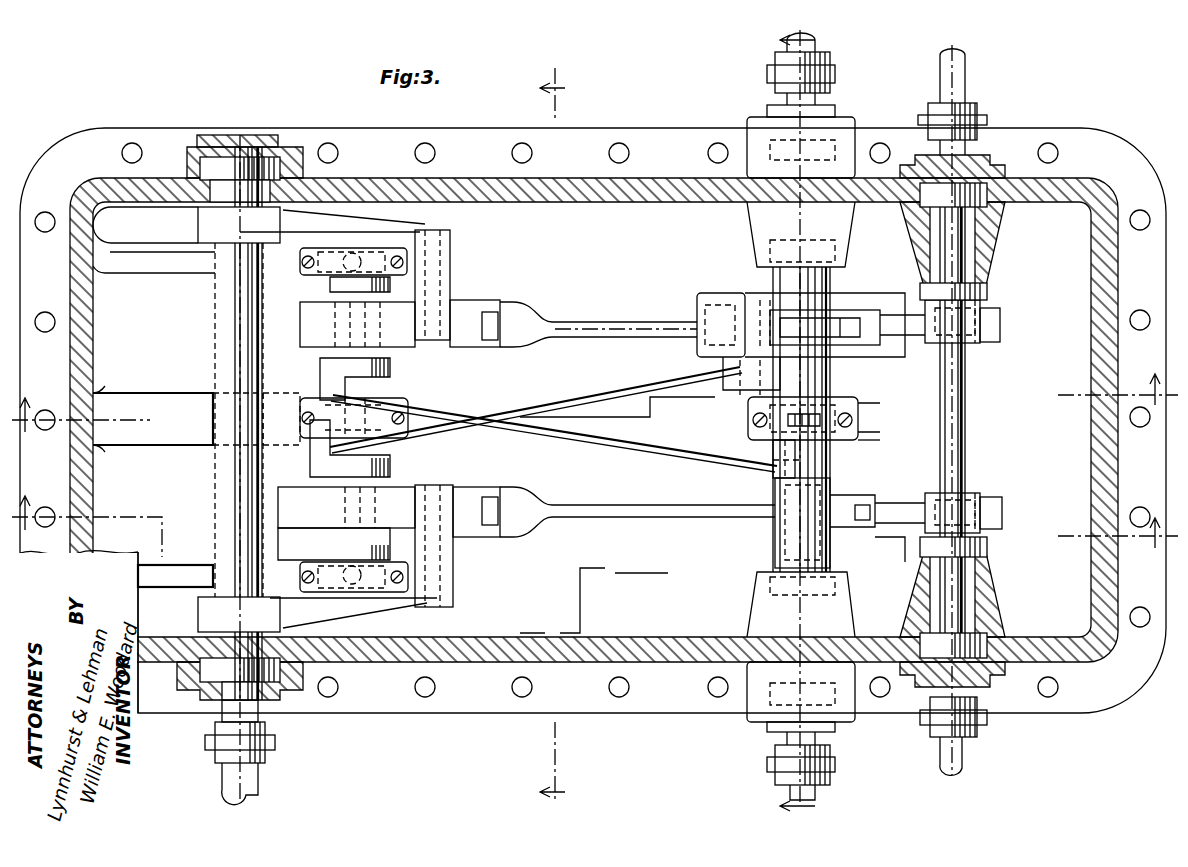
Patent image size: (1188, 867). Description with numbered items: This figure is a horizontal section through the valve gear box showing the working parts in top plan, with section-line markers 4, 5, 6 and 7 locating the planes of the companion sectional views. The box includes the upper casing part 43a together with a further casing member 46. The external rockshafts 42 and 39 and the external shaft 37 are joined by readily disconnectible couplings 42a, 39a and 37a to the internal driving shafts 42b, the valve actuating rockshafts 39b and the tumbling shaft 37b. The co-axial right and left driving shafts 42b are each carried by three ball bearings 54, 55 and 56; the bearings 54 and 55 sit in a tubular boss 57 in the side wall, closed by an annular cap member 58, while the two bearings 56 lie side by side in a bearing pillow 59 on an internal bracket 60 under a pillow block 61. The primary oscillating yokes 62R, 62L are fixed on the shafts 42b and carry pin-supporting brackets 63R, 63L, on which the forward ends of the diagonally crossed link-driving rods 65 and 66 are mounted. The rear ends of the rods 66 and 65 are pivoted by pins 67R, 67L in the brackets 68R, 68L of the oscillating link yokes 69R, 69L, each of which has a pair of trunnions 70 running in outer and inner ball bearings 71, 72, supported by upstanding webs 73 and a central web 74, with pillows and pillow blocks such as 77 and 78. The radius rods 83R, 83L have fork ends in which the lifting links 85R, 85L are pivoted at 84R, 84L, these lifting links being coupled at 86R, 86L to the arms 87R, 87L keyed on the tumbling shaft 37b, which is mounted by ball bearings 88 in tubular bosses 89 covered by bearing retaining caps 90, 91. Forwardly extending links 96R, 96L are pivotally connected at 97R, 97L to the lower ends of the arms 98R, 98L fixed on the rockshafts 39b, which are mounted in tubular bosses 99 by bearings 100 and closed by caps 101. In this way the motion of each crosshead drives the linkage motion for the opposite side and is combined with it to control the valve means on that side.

The section line 4- 4 is at (595, 530).
The section line 5- 5 is at (595, 411).
The section line 6- 6 is at (557, 435).
The section line 7- 7 is at (804, 415).
The shaft 37 is at (258, 775).
The coupling 37a is at (275, 742).
The tumbling shaft 37b is at (222, 502).
The rockshaft 39 is at (968, 65).
The coupling 39a is at (985, 112).
The valve actuating rockshaft 39b is at (968, 222).
The rockshaft 42 is at (818, 48).
The coupling 42a is at (836, 73).
The driving shaft 42b is at (812, 240).
The upper part of the box 43a is at (1108, 268).
The housing cover 46 is at (1125, 705).
The bearing 54 is at (770, 140).
The bearing 55 is at (775, 242).
The bearing 56 is at (826, 396).
The tubular boss 57 is at (840, 132).
The annular cap member 58 is at (752, 118).
The bearing pillow 59 is at (870, 440).
The internal bracket 60 is at (868, 406).
The pillow block 61 is at (750, 433).
The left primary oscillating member or yoke 62L is at (725, 278).
The right primary oscillating member or yoke 62R is at (775, 540).
The pin-supporting bracket 63L is at (730, 390).
The pin-supporting bracket 63R is at (775, 462).
The link-driving rod 65 is at (655, 446).
The link-driving rod 66 is at (592, 388).
The pin 67L is at (353, 324).
The pin 67R is at (346, 507).
The pin-supporting bracket 68L is at (320, 395).
The pin-supporting bracket 68R is at (310, 462).
The left-hand oscillating link yoke 69L is at (341, 291).
The right-hand oscillating link yoke 69R is at (334, 544).
The trunnions 70 is at (368, 262).
The outer ball bearing 71 is at (354, 420).
The inner ball bearing 72 is at (408, 418).
The upstanding web or bracket 73 is at (172, 262).
The central web or bracket 74 is at (182, 378).
The pillow block 77 is at (335, 248).
The pillow block 78 is at (300, 405).
The left radius rod 83L is at (595, 320).
The right radius rod 83R is at (592, 505).
The pivot 84L is at (470, 304).
The pivot 84R is at (470, 537).
The lifting link 85L is at (472, 344).
The lifting link 85R is at (472, 497).
The pivotal coupling 86L is at (445, 254).
The pivotal coupling 86R is at (450, 587).
The left-hand arm 87L is at (432, 230).
The right-hand arm 87R is at (420, 600).
The ball bearings 88 is at (212, 157).
The tubular bosses 89 is at (303, 150).
The bearing retaining cap 90 is at (200, 700).
The bearing retaining cap 91 is at (235, 135).
The link 96L is at (915, 338).
The link 96R is at (905, 503).
The pivotal connection 97L is at (975, 343).
The pivotal connection 97R is at (980, 493).
The arm 98L is at (1000, 322).
The arm 98R is at (1002, 507).
The tubular boss 99 is at (998, 250).
The bearing 100 is at (925, 183).
The closure cap 101 is at (990, 162).